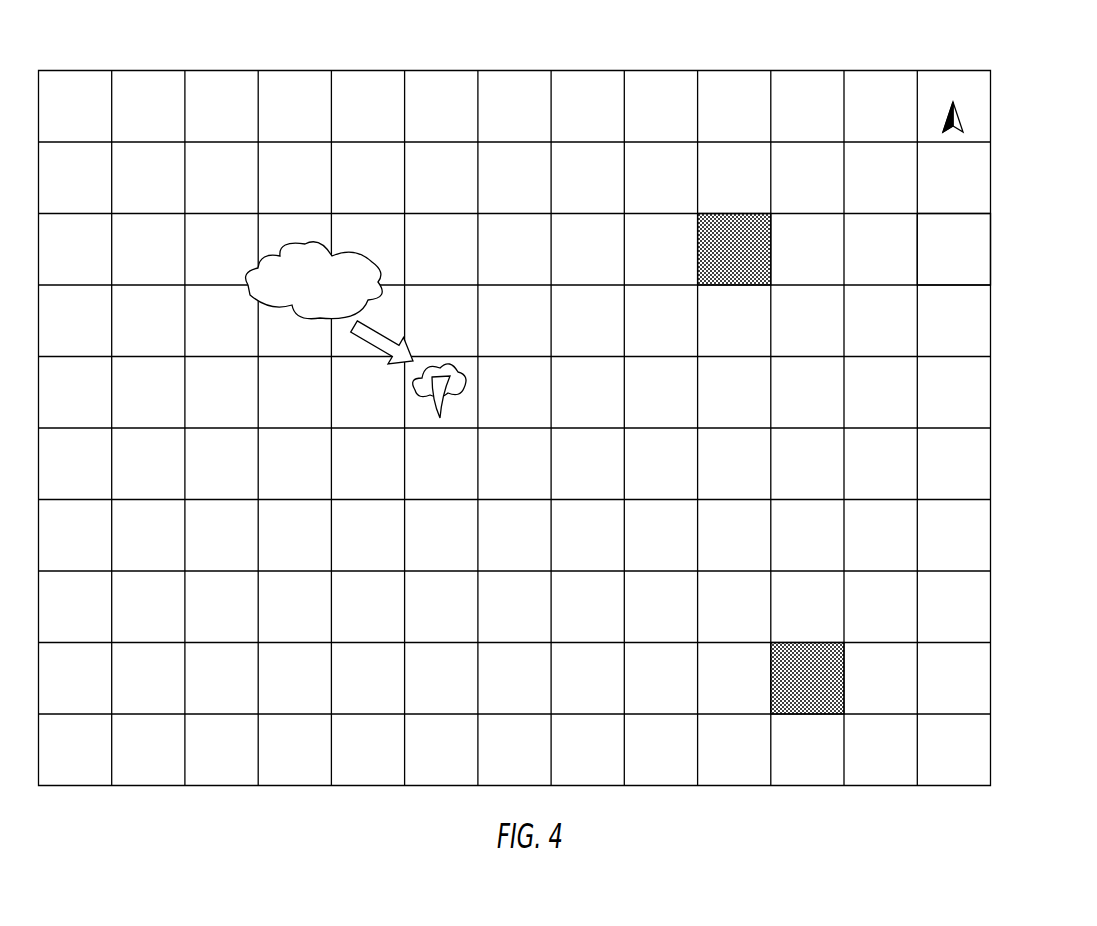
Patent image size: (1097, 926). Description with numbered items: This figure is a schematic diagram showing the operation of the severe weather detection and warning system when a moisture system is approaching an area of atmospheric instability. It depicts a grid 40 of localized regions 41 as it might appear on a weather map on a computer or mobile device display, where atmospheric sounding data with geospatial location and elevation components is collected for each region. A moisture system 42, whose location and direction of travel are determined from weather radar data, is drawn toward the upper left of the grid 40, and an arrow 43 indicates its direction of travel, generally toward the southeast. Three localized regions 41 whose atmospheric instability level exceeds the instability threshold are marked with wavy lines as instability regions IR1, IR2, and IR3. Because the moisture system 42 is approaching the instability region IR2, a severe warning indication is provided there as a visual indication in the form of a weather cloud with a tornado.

The grid 40 is at (994, 58).
The localized region 41 is at (974, 260).
The moisture system 42 is at (363, 257).
The arrow 43 is at (392, 338).
The instability region IR1 is at (772, 243).
The instability region IR2 is at (478, 392).
The instability region IR3 is at (845, 677).